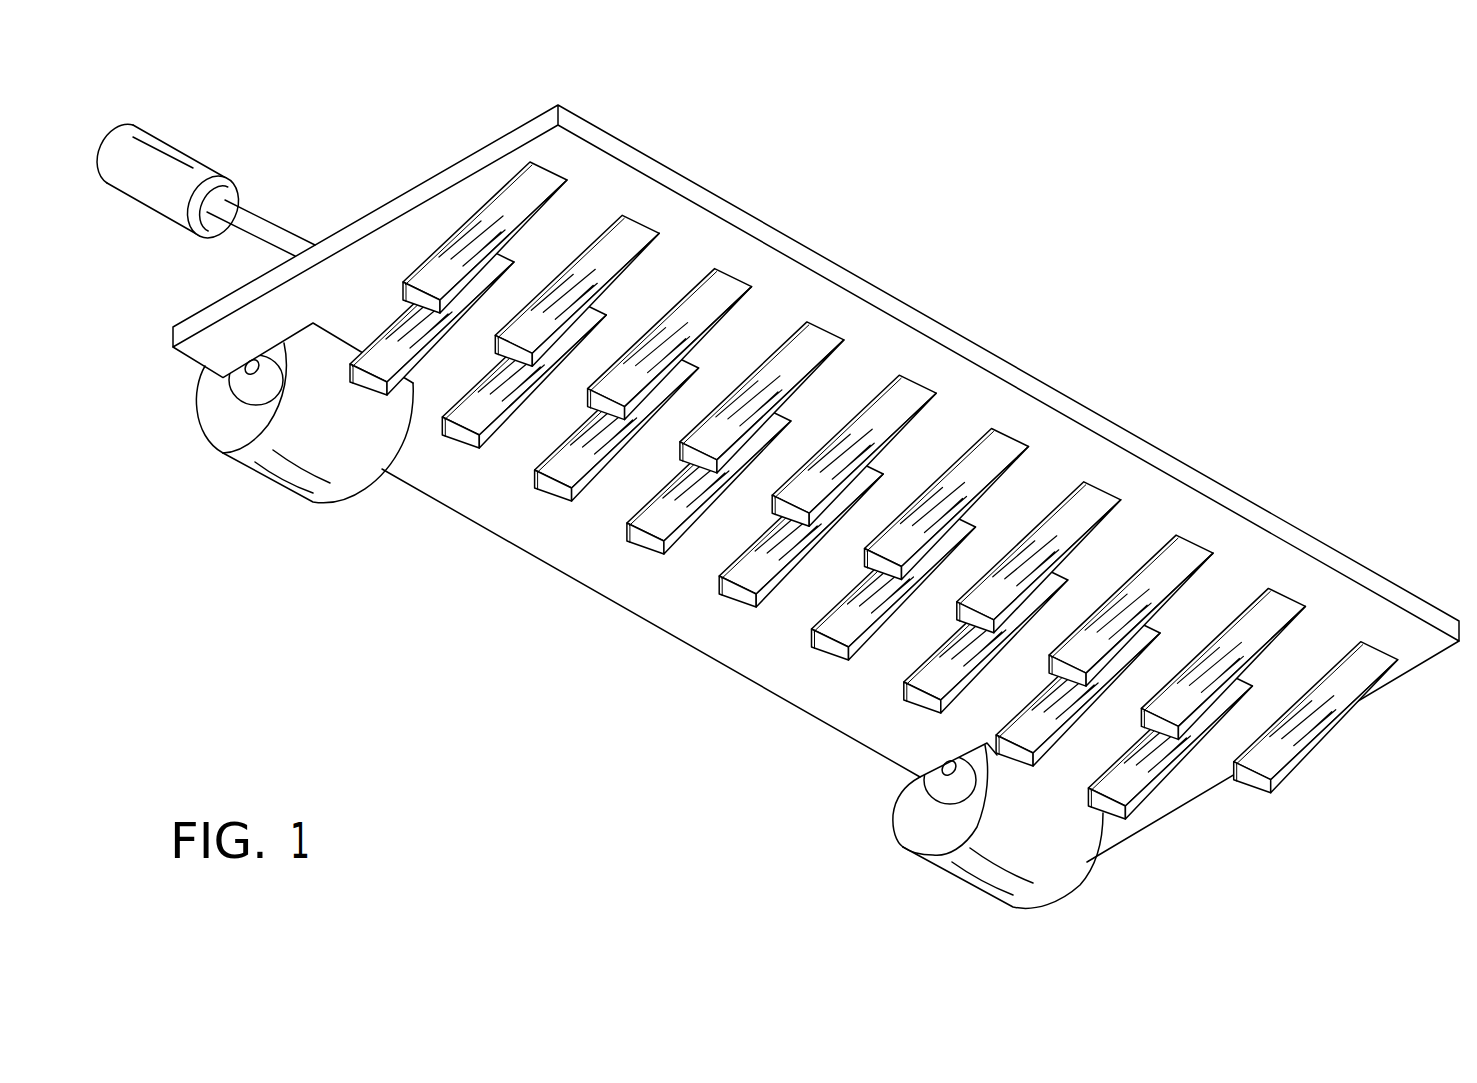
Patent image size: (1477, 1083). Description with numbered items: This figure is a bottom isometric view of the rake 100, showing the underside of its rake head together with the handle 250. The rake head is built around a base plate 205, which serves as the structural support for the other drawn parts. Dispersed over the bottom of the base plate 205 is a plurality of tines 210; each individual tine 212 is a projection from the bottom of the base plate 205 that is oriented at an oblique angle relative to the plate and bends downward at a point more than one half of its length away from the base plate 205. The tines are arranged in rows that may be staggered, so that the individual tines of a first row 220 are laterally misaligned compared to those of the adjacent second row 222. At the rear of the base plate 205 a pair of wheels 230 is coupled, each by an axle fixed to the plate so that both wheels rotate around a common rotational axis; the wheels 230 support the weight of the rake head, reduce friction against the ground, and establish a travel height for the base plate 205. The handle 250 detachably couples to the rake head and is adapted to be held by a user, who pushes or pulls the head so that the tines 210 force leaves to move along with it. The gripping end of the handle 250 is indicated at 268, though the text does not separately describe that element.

The floor covering system 100 is at (1188, 162).
The base plate 205 is at (660, 600).
The tiles 210 is at (910, 466).
The tile 212 is at (1272, 614).
The first end of tile 220 is at (1347, 745).
The second end of tile 222 is at (1231, 828).
The wheel 230 is at (281, 476).
The handle shaft 250 is at (277, 224).
The handle grip 268 is at (153, 143).